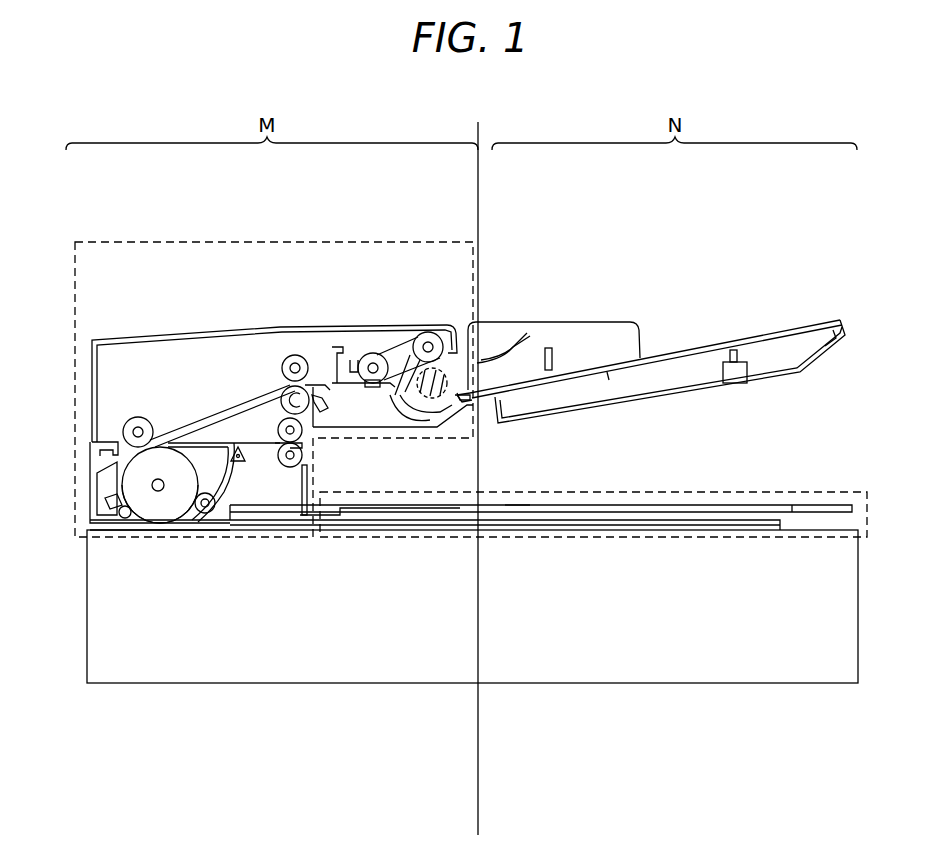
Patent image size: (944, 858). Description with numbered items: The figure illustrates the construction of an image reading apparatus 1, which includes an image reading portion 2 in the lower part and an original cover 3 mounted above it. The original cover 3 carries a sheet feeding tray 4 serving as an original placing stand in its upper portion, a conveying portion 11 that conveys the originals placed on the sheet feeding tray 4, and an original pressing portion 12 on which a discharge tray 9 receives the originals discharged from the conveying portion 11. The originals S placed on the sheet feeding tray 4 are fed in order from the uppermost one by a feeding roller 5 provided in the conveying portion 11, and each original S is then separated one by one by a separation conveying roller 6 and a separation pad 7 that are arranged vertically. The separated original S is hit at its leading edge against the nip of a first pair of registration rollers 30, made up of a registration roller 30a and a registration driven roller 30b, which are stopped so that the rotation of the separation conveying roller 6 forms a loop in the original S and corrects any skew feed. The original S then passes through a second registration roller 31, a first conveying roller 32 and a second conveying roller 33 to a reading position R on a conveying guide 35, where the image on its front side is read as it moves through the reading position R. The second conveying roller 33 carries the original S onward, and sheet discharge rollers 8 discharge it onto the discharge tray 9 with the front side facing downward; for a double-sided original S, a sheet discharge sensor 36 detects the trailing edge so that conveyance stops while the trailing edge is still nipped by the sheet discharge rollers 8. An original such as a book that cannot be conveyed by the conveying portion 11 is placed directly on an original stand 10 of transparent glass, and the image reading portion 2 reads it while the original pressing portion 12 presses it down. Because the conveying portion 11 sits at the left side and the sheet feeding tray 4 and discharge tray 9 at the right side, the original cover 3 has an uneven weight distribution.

The image reading apparatus 1 is at (596, 278).
The image reading portion 2 is at (699, 685).
The original cover 3 is at (72, 306).
The sheet feeding tray 4 is at (780, 362).
The feeding roller 5 is at (428, 332).
The separation conveying roller 6 is at (373, 353).
The separation pad 7 is at (380, 397).
The sheet discharge rollers 8 is at (305, 445).
The discharge tray 9 is at (645, 485).
The original stand 10 is at (372, 538).
The conveying portion 11 is at (258, 241).
The original pressing portion 12 is at (520, 491).
The first pair of registration rollers 30 is at (238, 285).
The registration roller 30a is at (286, 356).
The registration driven roller 30b is at (333, 350).
The second registration roller 31 is at (136, 418).
The first conveying roller 32 is at (118, 516).
The second conveying roller 33 is at (203, 515).
The conveying guide 35 is at (163, 512).
The sheet discharge sensor 36 is at (243, 463).
The reading position R is at (160, 485).
The original S is at (668, 343).